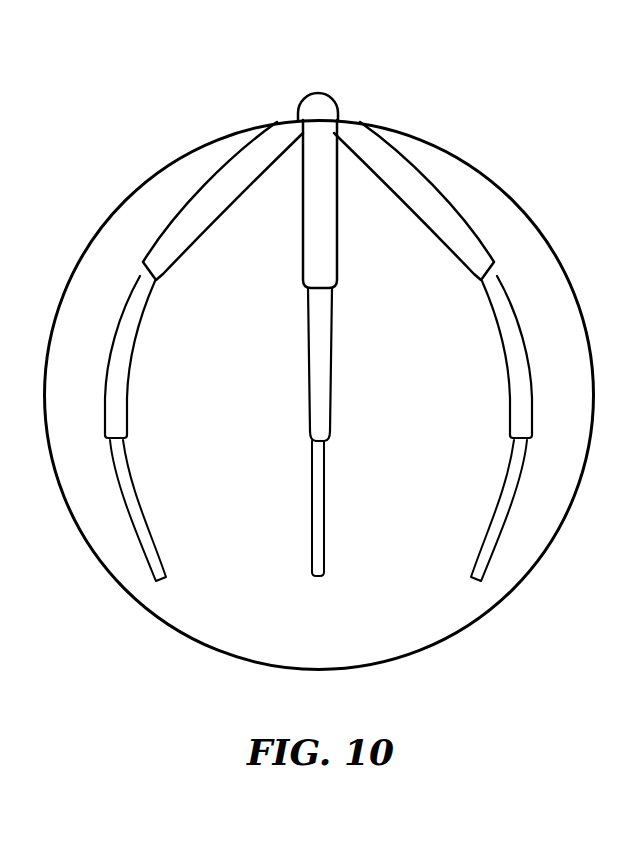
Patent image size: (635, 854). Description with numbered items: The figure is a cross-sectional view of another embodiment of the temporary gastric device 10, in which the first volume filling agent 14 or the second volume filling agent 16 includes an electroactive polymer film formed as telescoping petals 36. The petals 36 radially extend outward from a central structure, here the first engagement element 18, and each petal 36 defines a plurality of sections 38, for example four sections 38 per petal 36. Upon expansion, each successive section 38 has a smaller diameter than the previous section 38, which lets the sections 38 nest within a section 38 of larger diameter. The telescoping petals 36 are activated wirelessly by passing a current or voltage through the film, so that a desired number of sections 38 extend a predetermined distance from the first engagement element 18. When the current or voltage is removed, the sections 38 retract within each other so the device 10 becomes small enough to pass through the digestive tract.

The temporary gastric device 10 is at (492, 121).
The first volume filling agent 14 is at (520, 203).
The second volume filling agent 16 is at (216, 345).
The first engagement element 18 is at (317, 88).
The petals 36 is at (158, 228).
The sections 38 is at (310, 372).